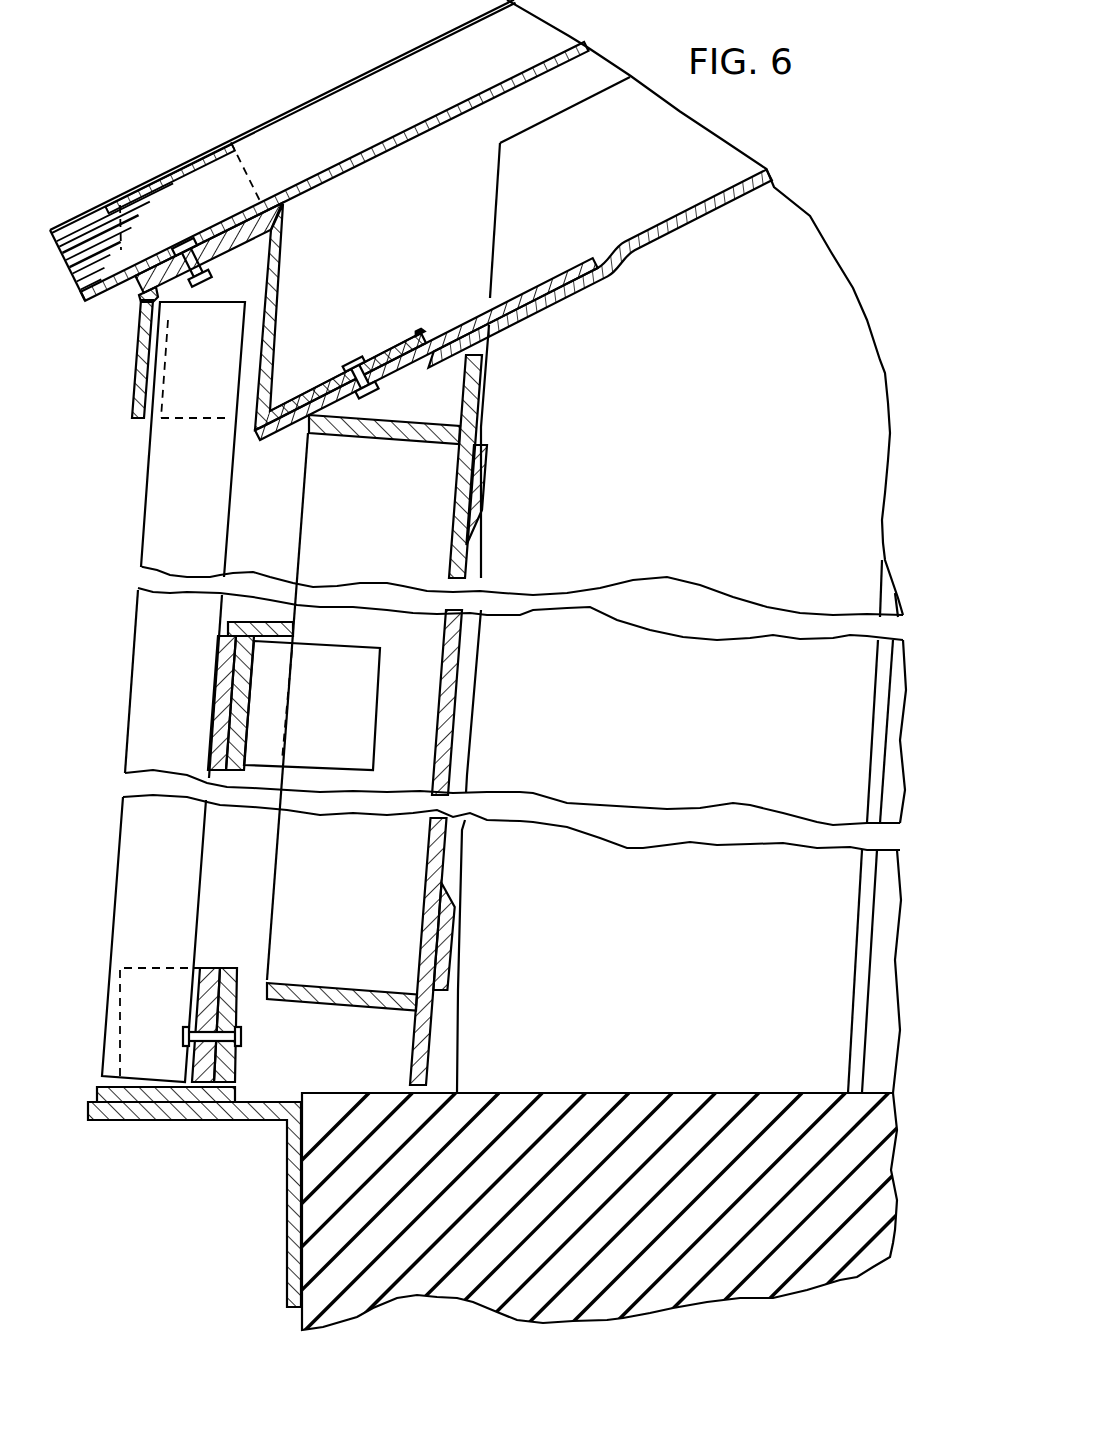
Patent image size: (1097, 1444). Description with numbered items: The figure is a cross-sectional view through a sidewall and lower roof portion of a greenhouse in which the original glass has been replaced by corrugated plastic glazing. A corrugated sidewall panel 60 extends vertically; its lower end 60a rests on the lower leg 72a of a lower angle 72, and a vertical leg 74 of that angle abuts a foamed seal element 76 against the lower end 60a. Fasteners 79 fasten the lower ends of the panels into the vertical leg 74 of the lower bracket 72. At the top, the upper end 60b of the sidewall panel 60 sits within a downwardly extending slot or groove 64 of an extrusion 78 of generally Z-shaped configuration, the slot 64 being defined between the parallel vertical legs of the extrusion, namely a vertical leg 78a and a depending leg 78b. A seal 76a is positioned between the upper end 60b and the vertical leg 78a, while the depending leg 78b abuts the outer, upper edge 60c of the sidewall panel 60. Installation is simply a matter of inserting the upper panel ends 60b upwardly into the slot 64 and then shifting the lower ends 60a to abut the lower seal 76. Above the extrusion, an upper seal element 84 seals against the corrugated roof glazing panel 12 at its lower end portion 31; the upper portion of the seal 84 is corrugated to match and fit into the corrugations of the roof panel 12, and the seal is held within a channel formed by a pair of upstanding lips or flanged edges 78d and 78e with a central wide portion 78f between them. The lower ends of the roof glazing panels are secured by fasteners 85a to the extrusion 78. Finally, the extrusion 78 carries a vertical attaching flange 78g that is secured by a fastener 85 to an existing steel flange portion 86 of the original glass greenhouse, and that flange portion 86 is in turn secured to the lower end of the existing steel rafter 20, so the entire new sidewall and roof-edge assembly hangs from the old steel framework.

The roof glazing panel 12 is at (343, 88).
The steel rafter 20 is at (684, 224).
The lower end portion 31 is at (167, 172).
The sidewall panel 60 is at (193, 659).
The lower end 60a is at (140, 1053).
The upper end 60b is at (180, 358).
The outer upper edge 60c is at (162, 408).
The slot 64 is at (248, 290).
The lower angle 72 is at (205, 1167).
The lower leg 72a is at (150, 1093).
The vertical leg 74 is at (240, 1008).
The foamed seal element 76 is at (311, 720).
The seal 76a is at (276, 364).
The extrusion 78 is at (249, 288).
The vertical leg 78a is at (280, 298).
The depending leg 78b is at (140, 398).
The upstanding lip 78d is at (147, 300).
The upstanding lip 78e is at (284, 212).
The central wide portion 78f is at (236, 266).
The vertical attaching flange 78g is at (413, 334).
The fastener 79 is at (213, 1005).
The upper seal element 84 is at (203, 240).
The fastener 85 is at (374, 397).
The fastener 85a is at (178, 236).
The steel flange portion 86 is at (529, 288).